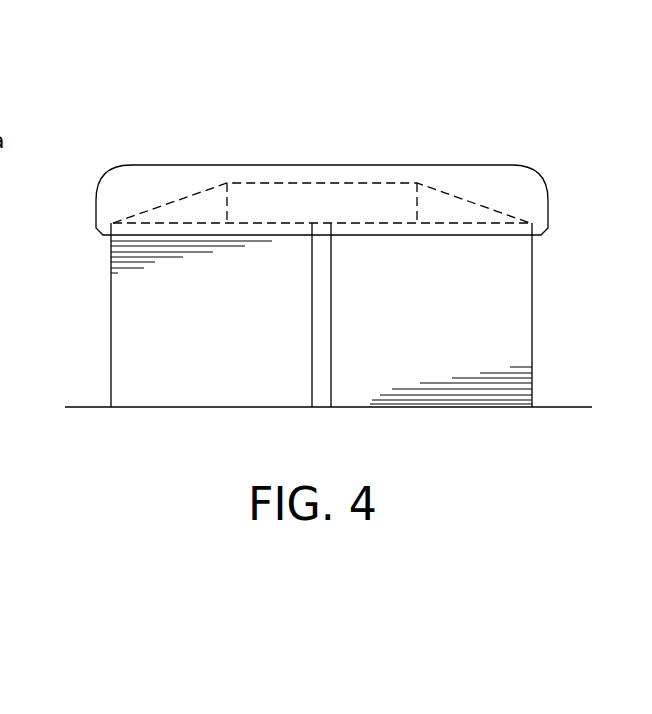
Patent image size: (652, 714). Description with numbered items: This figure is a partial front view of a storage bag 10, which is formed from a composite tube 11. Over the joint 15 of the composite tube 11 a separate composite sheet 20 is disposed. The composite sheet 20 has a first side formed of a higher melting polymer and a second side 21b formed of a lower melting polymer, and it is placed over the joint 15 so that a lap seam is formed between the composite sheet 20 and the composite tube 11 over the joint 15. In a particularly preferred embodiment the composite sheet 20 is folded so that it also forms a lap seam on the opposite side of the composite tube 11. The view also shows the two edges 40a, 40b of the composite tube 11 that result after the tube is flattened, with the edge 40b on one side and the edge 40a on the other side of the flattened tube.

The storage bag 10 is at (568, 130).
The composite tube 11 is at (500, 321).
The joint 15 is at (477, 223).
The composite sheet 20 is at (126, 197).
The second side 21b is at (163, 178).
The edge 40a is at (532, 377).
The edge 40b is at (111, 308).